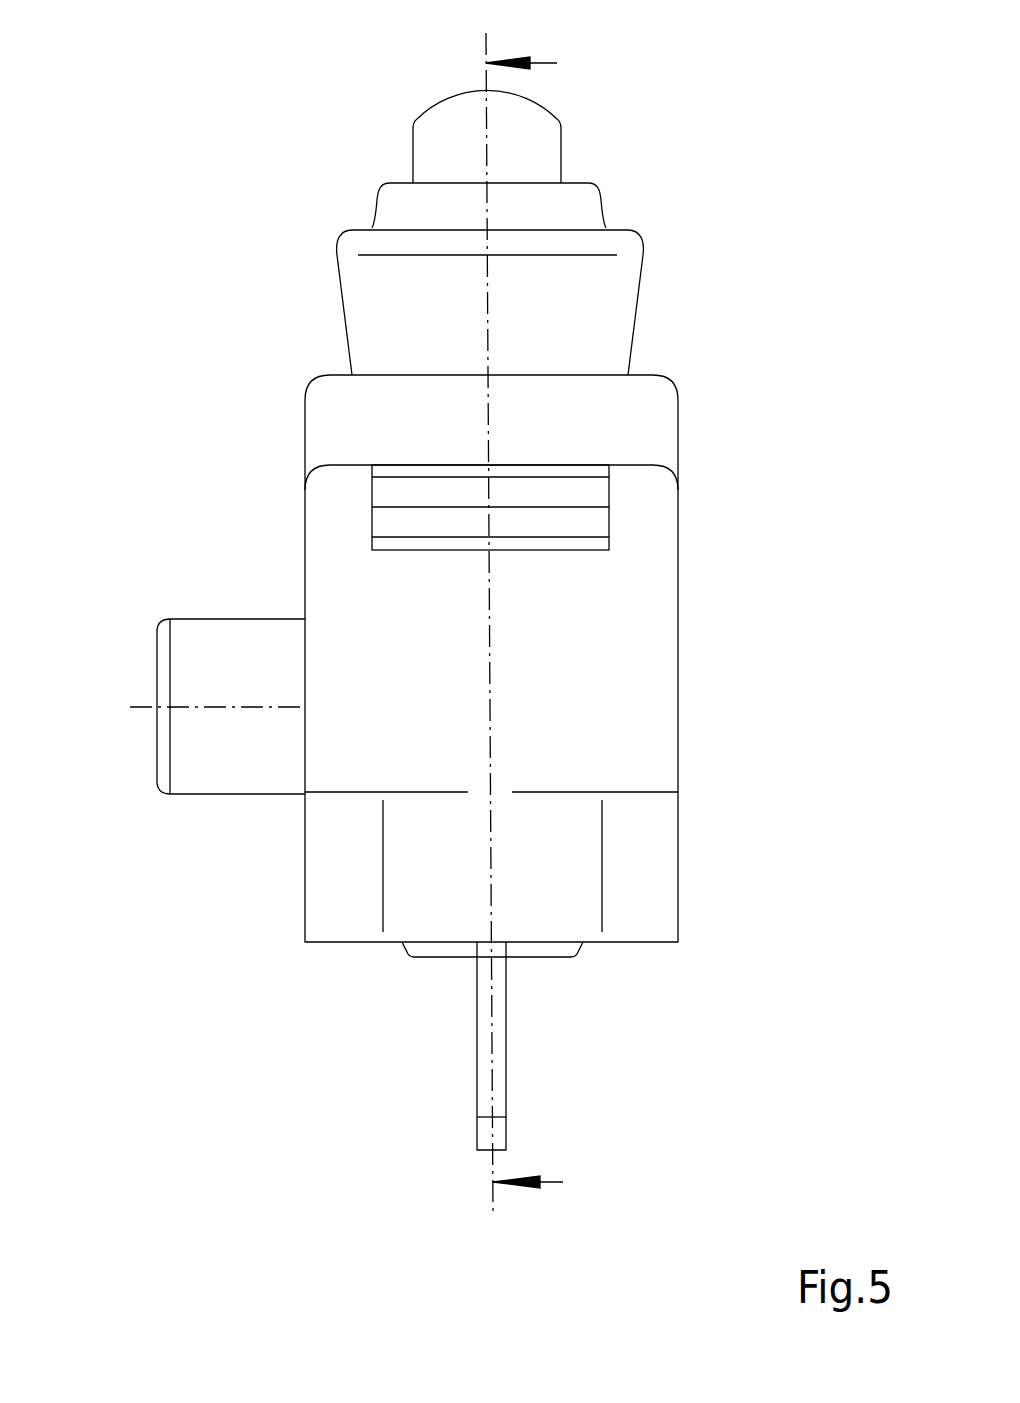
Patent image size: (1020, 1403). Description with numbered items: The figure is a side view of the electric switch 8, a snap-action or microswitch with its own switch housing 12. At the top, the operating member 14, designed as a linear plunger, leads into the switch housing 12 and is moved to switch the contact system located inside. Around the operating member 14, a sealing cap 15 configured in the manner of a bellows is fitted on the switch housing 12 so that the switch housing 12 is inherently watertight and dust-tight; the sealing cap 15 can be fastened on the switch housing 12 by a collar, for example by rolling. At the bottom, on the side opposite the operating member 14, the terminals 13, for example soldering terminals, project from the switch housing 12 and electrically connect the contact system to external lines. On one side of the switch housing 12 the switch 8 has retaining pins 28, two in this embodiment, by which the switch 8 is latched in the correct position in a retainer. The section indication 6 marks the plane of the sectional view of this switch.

The section line of FIG. 6 is at (529, 624).
The electric switch 8 is at (314, 220).
The switch housing 12 is at (635, 510).
The terminals 13 is at (490, 1023).
The operating member 14 is at (527, 143).
The sealing cap 15 is at (590, 270).
The retaining pins 28 is at (210, 765).